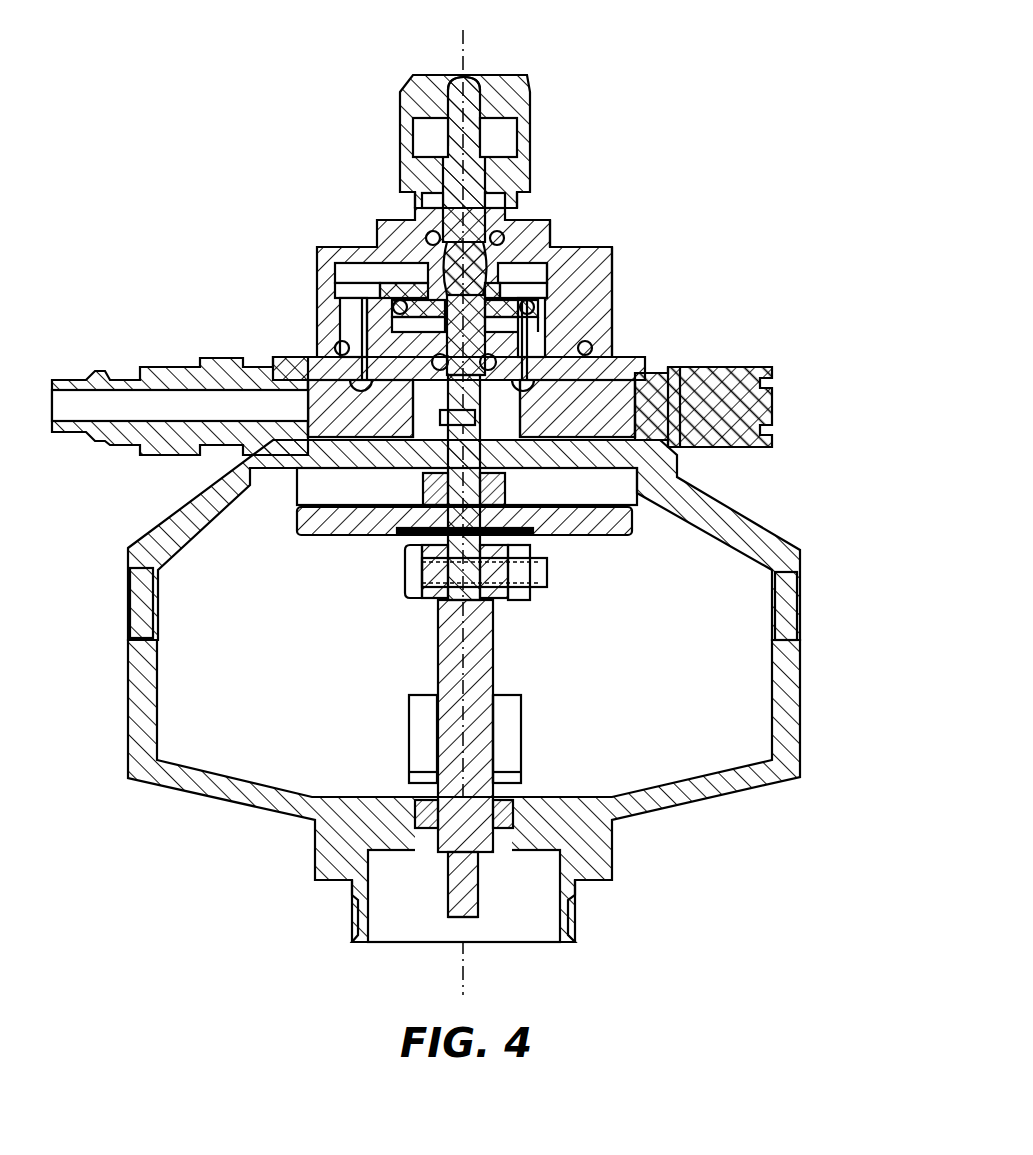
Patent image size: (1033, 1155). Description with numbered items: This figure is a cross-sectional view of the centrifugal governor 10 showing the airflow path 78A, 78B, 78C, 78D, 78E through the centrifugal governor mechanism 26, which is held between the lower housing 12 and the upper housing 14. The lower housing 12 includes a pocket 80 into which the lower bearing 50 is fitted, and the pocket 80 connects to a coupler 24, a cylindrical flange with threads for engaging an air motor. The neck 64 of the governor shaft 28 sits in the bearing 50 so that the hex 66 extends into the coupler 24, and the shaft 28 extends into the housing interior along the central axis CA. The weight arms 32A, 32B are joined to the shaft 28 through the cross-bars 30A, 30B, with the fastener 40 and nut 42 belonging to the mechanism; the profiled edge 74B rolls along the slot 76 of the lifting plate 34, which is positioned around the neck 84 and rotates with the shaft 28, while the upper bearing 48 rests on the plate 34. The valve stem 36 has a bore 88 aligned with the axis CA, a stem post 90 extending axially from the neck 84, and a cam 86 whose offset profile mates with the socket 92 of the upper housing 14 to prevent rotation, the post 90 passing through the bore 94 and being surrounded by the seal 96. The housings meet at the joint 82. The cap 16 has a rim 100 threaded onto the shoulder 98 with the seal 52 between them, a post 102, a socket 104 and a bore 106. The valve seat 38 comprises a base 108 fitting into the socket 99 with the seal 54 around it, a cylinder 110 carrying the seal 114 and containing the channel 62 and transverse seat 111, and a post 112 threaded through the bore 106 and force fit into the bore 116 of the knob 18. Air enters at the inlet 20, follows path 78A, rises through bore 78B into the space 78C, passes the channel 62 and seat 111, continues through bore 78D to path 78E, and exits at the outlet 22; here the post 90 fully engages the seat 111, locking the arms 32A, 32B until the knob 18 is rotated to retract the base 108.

The centrifugal governor 10 is at (718, 130).
The lower housing 12 is at (712, 800).
The upper housing 14 is at (740, 505).
The cap 16 is at (312, 268).
The knob 18 is at (535, 138).
The inlet 20 is at (205, 358).
The outlet 22 is at (700, 362).
The coupler 24 is at (352, 920).
The centrifugal governor mechanism 26 is at (552, 573).
The governor shaft 28 is at (445, 660).
The cross-bar 30A is at (435, 600).
The cross-bar 30B is at (490, 600).
The profiled weight arm 32A is at (405, 717).
The profiled weight arm 32B is at (525, 717).
The lifting plate 34 is at (660, 430).
The valve stem 36 is at (330, 490).
The valve seat 38 is at (485, 92).
The fastener 40 is at (405, 575).
The nut 42 is at (522, 600).
The upper bearing 48 is at (735, 390).
The lower bearing 50 is at (512, 812).
The seal 52 is at (560, 335).
The seal 54 is at (550, 290).
The channel 62 is at (565, 240).
The neck 64 is at (465, 855).
The hex 66 is at (478, 880).
The profiled edge 74B is at (510, 760).
The slot 76 is at (560, 522).
The airflow path 78A is at (360, 408).
The airflow path 78B is at (363, 370).
The airflow path 78C is at (400, 268).
The airflow path 78D is at (540, 330).
The airflow path 78E is at (577, 408).
The pocket 80 is at (420, 812).
The joint 82 is at (140, 605).
The neck 84 is at (440, 532).
The cam 86 is at (420, 476).
The bore 88 is at (476, 418).
The stem post 90 is at (430, 375).
The socket 92 is at (590, 350).
The bore 94 is at (555, 305).
The seal 96 is at (342, 340).
The shoulder 98 is at (597, 320).
The socket 99 is at (547, 270).
The rim 100 is at (317, 285).
The post 102 is at (420, 190).
The socket 104 is at (498, 215).
The bore 106 is at (505, 185).
The base 108 is at (395, 302).
The cylinder 110 is at (430, 158).
The transverse seat 111 is at (520, 265).
The post 112 is at (448, 88).
The seal 114 is at (503, 238).
The bore 116 is at (445, 112).
The central axis CA is at (465, 72).